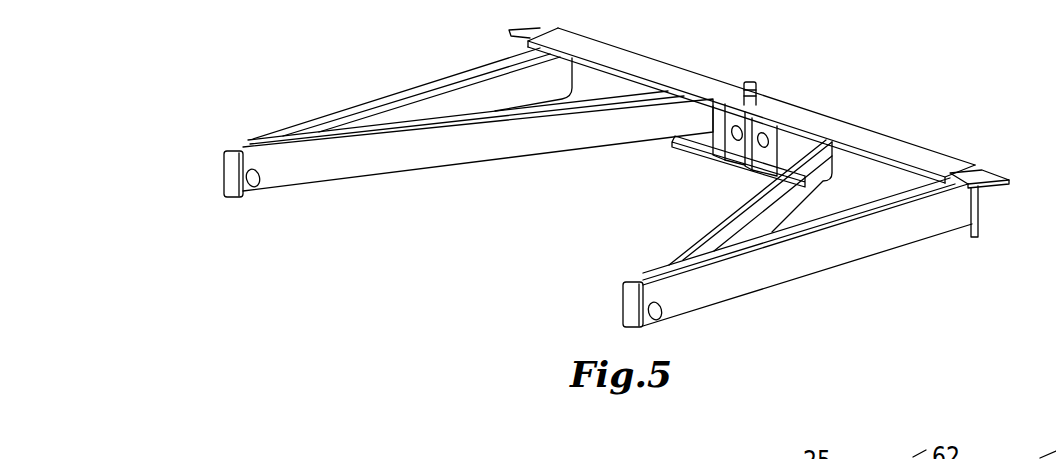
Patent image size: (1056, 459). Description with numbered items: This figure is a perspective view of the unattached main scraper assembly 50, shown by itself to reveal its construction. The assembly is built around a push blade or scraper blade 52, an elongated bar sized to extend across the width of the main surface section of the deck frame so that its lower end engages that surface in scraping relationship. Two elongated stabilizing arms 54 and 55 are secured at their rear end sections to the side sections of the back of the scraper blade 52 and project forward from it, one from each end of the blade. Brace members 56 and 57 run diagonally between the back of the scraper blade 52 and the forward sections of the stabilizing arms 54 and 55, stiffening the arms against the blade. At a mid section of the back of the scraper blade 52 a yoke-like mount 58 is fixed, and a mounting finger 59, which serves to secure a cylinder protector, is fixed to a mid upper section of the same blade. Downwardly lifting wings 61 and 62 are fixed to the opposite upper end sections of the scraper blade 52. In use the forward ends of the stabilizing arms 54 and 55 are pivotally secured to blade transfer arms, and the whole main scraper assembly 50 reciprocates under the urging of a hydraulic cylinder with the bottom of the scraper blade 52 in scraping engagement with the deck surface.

The main scraper assembly 50 is at (668, 63).
The scraper blade 52 is at (881, 143).
The stabilizing arm 54 is at (420, 107).
The stabilizing arm 55 is at (860, 240).
The brace member 56 is at (443, 148).
The brace member 57 is at (700, 240).
The yoke-like mount 58 is at (776, 140).
The mounting finger 59 is at (758, 88).
The lifting wing 61 is at (528, 30).
The lifting wing 62 is at (986, 175).